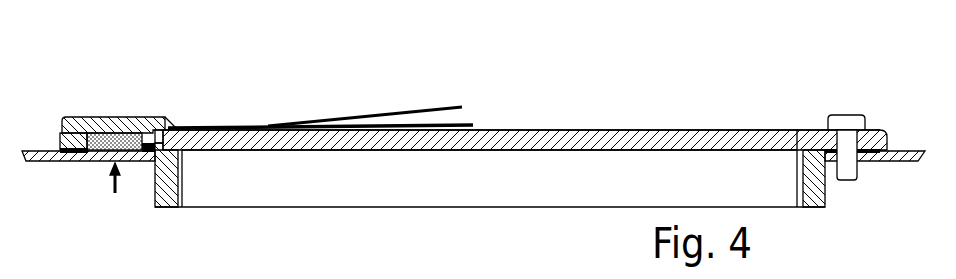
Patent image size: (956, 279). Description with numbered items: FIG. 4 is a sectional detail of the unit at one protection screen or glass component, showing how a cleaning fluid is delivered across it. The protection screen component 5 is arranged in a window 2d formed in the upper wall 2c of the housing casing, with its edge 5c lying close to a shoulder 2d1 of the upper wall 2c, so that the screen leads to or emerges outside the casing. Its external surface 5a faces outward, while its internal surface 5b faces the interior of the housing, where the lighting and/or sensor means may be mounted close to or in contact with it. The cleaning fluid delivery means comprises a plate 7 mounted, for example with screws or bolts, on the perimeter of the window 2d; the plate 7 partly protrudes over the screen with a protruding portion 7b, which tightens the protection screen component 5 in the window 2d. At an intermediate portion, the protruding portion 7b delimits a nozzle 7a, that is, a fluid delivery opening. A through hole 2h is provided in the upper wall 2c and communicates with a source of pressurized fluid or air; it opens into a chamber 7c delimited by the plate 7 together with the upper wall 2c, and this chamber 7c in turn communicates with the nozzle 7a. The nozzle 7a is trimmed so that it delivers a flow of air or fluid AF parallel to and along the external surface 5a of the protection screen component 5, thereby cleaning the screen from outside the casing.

The upper wall 2c is at (42, 150).
The window 2d is at (168, 170).
The shoulder 2d1 is at (808, 147).
The through hole 2h is at (95, 162).
The protection screen component 5 is at (632, 128).
The external surface 5a is at (530, 130).
The internal surface 5b is at (450, 150).
The edge 5c is at (808, 137).
The plate 7 is at (113, 122).
The nozzle 7a is at (175, 128).
The protruding portion 7b is at (166, 125).
The chamber 7c is at (102, 140).
The flow of air or fluid AF is at (345, 118).